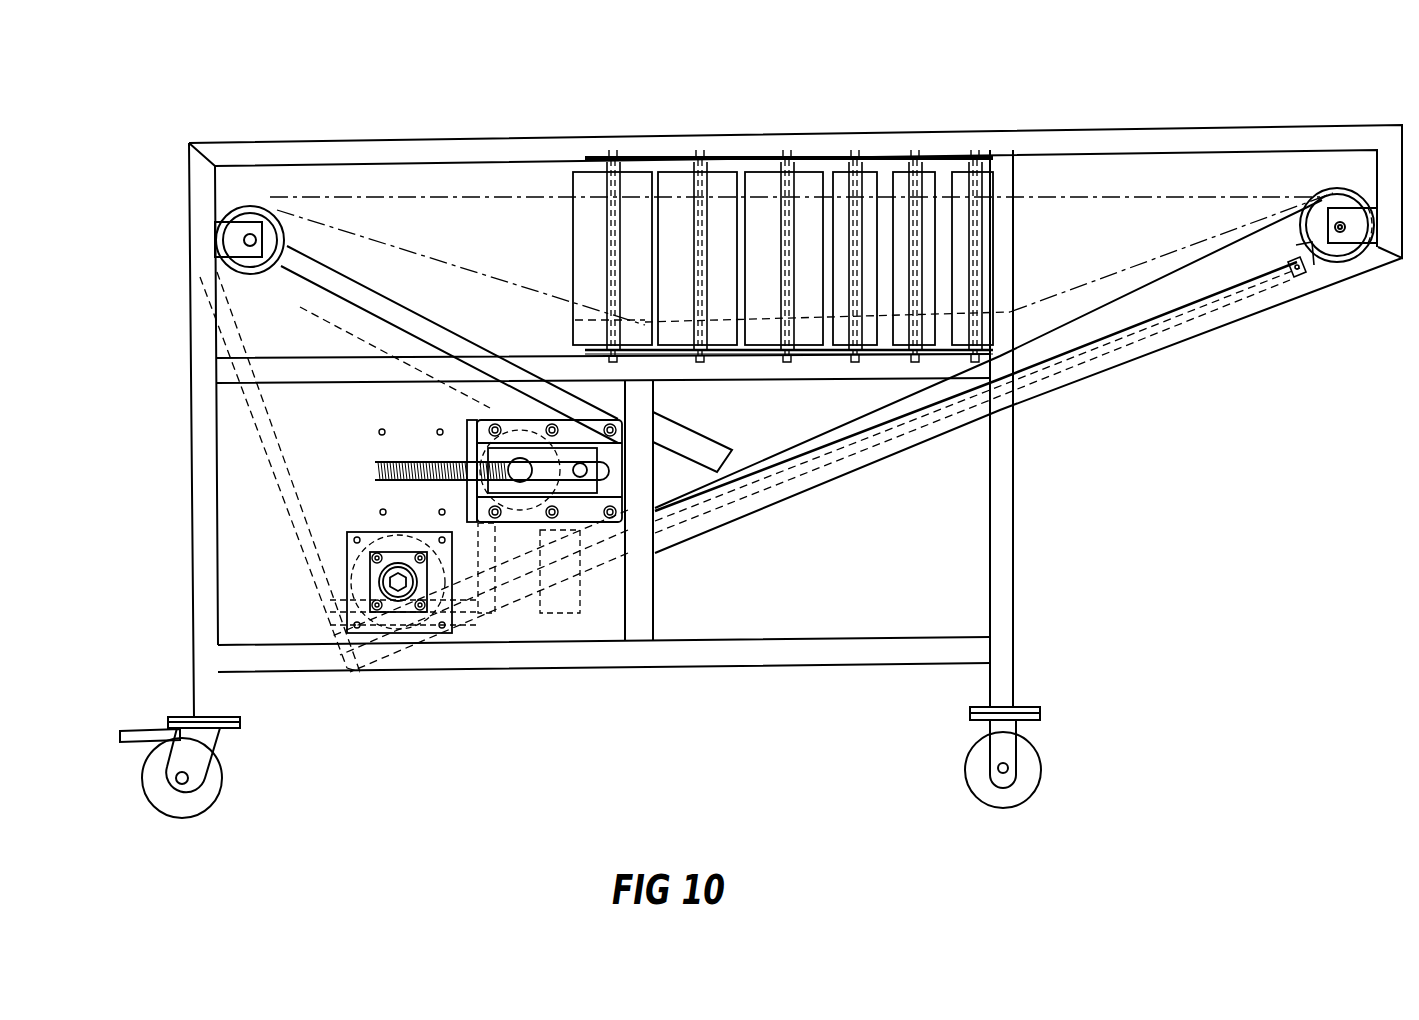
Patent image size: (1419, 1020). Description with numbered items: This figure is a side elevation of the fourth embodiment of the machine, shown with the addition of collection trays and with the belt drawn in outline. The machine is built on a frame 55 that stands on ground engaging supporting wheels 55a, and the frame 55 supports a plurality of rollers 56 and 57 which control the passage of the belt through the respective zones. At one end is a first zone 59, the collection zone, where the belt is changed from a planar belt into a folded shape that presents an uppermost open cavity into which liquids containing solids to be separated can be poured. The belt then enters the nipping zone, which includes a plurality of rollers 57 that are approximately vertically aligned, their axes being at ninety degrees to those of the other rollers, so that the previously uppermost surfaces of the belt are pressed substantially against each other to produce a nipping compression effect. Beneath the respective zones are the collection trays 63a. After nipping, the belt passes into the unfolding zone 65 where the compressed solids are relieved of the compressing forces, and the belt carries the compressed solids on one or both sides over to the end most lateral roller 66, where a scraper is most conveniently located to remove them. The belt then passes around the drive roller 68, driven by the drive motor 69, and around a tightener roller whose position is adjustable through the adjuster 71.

The frame 55 is at (1013, 593).
The ground engaging supporting wheels 55a is at (212, 778).
The roller 56 is at (1340, 250).
The rollers 57 is at (682, 173).
The first zone 59 is at (496, 249).
The collection trays 63a is at (685, 452).
The unfolding zone 65 is at (1096, 242).
The end most lateral roller 66 is at (1298, 278).
The drive roller 68 is at (347, 557).
The drive motor 69 is at (585, 620).
The adjuster 71 is at (493, 410).